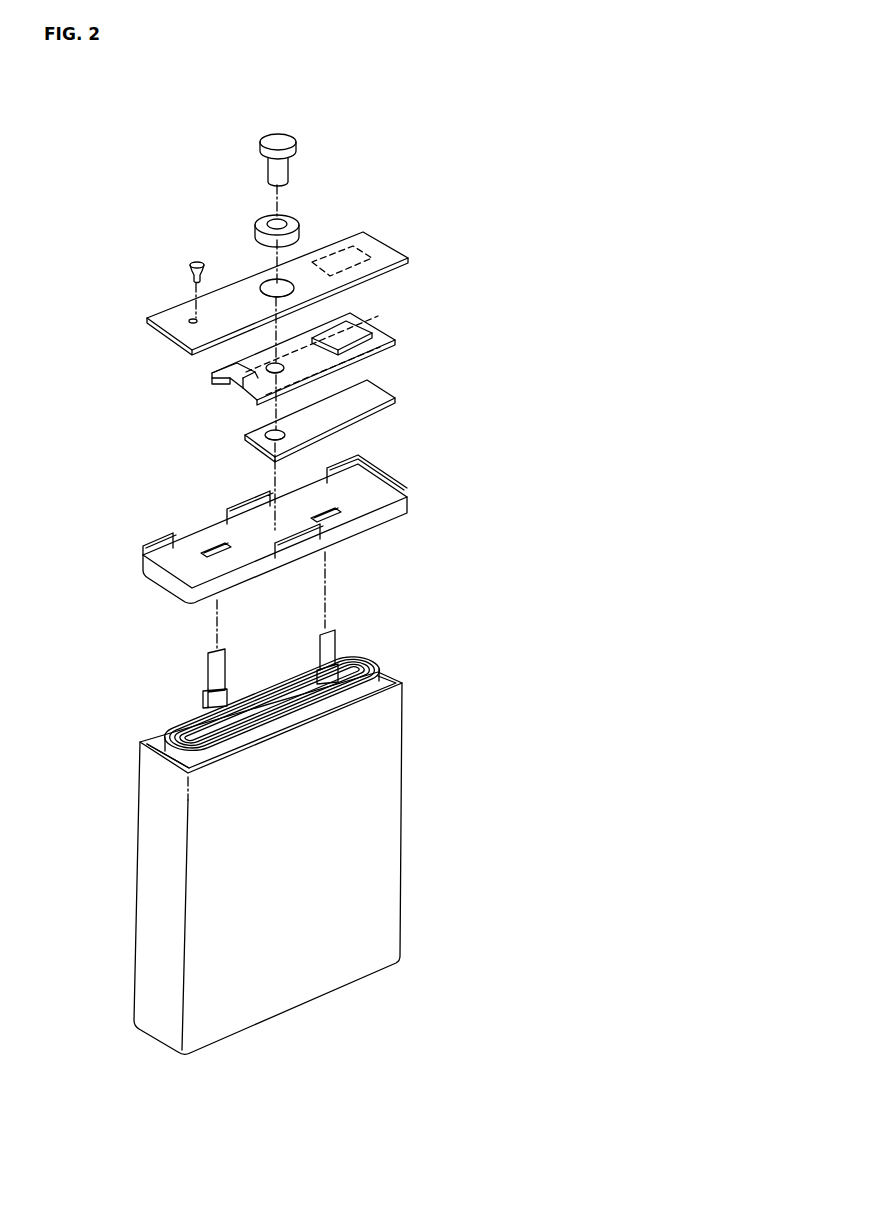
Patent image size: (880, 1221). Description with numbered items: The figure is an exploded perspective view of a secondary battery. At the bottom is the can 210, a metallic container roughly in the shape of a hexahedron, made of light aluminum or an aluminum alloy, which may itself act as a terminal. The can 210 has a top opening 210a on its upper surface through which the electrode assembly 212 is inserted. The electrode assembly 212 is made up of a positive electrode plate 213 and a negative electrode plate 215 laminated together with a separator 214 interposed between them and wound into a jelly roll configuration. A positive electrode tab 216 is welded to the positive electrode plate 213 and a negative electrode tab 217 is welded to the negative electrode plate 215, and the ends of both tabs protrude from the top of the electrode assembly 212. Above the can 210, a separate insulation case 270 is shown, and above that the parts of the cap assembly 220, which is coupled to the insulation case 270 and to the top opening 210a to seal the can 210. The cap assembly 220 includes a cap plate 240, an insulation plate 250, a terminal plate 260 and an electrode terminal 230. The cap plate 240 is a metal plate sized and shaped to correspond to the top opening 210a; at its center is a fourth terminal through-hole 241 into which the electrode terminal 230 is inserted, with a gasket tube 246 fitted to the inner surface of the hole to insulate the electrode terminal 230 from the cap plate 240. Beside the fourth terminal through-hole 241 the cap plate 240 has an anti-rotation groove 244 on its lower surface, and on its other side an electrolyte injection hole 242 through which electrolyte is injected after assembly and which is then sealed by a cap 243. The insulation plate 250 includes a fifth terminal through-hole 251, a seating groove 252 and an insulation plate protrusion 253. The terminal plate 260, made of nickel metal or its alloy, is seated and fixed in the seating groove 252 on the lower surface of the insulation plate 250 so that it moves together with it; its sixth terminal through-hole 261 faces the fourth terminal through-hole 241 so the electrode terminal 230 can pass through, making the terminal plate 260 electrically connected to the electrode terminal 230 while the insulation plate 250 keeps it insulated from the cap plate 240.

The can 210 is at (387, 817).
The top opening 210a is at (398, 678).
The electrode assembly 212 is at (285, 664).
The positive electrode plate 213 is at (377, 660).
The separator 214 is at (363, 660).
The negative electrode plate 215 is at (357, 658).
The positive electrode tab 216 is at (217, 677).
The negative electrode tab 217 is at (327, 648).
The cap assembly 220 is at (463, 132).
The electrode terminal 230 is at (283, 143).
The cap plate 240 is at (368, 247).
The fourth terminal through-hole 241 is at (268, 279).
The electrolyte injection hole 242 is at (190, 318).
The cap 243 is at (191, 262).
The anti-rotation groove 244 is at (343, 257).
The gasket tube 246 is at (262, 221).
The insulation plate 250 is at (380, 327).
The fifth terminal through-hole 251 is at (245, 387).
The seating groove 252 is at (212, 373).
The insulation plate protrusion 253 is at (348, 330).
The terminal plate 260 is at (378, 387).
The sixth terminal through-hole 261 is at (255, 443).
The insulation case 270 is at (150, 569).